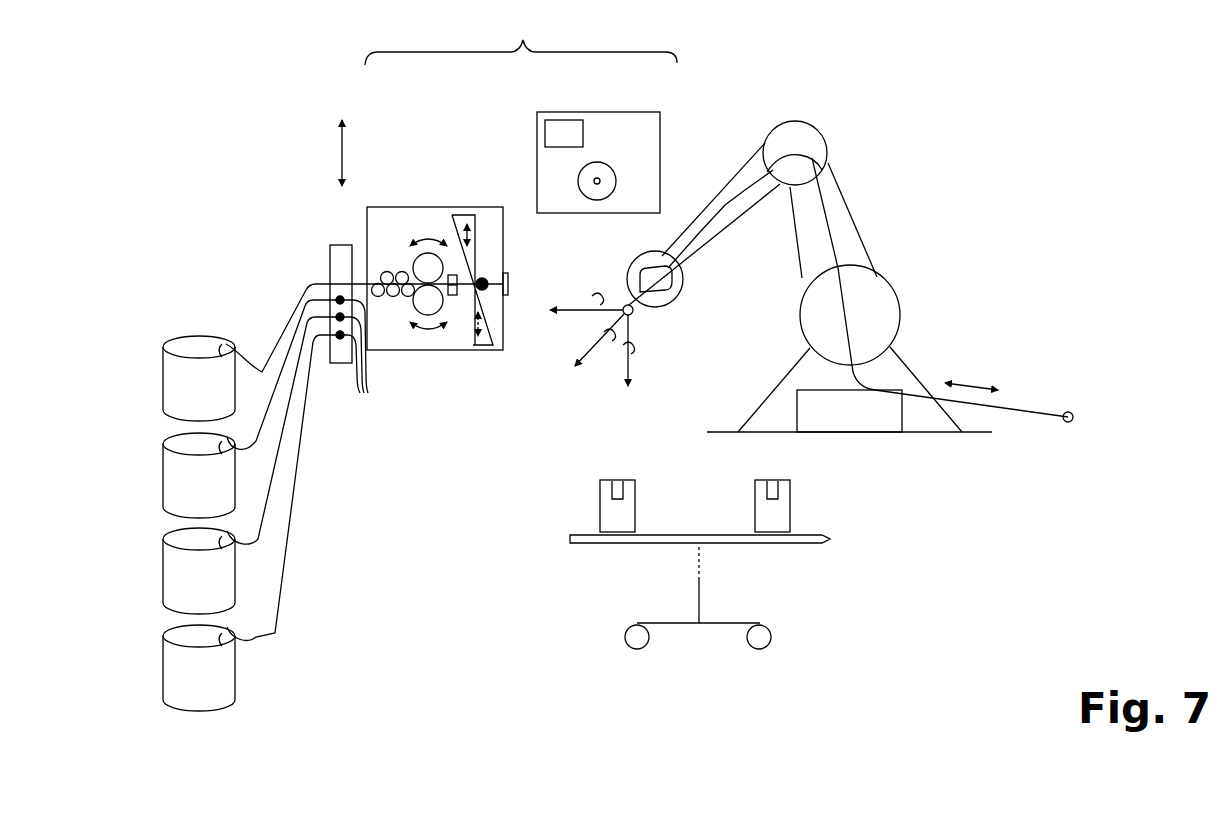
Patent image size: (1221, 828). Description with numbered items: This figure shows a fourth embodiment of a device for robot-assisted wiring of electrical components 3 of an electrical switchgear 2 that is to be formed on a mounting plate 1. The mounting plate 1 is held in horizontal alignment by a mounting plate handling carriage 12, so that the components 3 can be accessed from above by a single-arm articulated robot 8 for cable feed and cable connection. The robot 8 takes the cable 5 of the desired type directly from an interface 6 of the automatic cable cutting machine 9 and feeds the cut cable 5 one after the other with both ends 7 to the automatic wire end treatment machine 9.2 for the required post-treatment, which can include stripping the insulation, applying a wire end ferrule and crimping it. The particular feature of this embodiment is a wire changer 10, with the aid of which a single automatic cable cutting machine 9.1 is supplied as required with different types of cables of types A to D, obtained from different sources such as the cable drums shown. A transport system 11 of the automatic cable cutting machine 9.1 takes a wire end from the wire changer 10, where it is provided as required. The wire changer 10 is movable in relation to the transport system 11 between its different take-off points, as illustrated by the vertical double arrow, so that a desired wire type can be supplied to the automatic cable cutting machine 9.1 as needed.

The mounting plate 1 is at (832, 540).
The electrical switchgear 2 is at (712, 500).
The electrical components 3 is at (620, 510).
The cable 5 is at (236, 345).
The interface 6 is at (509, 284).
The cable ends 7 is at (1068, 460).
The single-arm articulated robot 8 is at (811, 143).
The automatic cable cutting machine 9 is at (521, 37).
The automatic cable cutting machine 9.1 is at (431, 220).
The automatic wire end treatment machine 9.2 is at (634, 128).
The wire changer 10 is at (341, 222).
The transport system 11 is at (390, 296).
The mounting plate handling carriage 12 is at (731, 622).